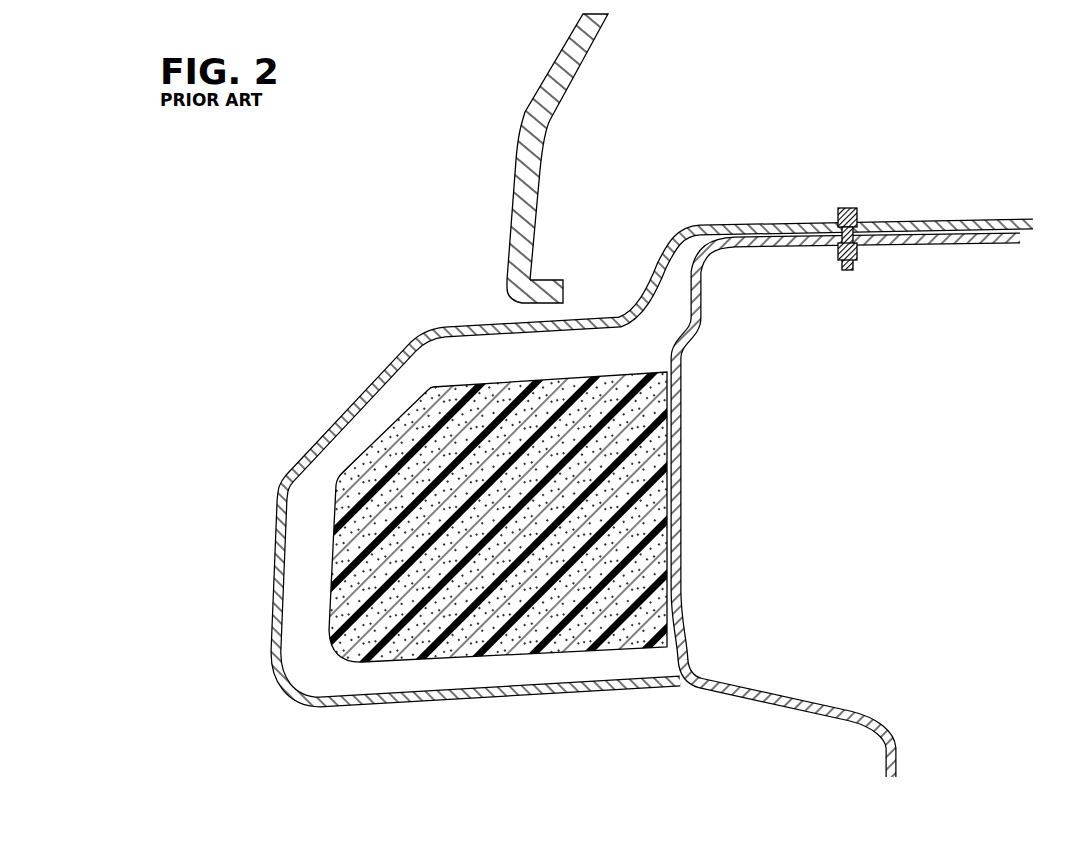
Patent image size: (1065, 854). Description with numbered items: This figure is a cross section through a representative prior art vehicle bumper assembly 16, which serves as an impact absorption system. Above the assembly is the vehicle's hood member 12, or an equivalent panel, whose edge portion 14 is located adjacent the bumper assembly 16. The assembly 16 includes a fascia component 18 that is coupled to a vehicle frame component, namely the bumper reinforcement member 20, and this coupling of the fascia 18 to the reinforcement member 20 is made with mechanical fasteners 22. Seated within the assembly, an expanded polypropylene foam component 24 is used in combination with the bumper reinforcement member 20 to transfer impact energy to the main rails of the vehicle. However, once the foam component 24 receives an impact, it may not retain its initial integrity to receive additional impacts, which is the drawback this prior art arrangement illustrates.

The hood member 12 is at (538, 88).
The edge portion 14 is at (506, 277).
The bumper assembly 16 is at (623, 500).
The fascia component 18 is at (376, 365).
The bumper reinforcement member 20 is at (680, 472).
The mechanical fasteners 22 is at (848, 207).
The expanded polypropylene foam component 24 is at (392, 450).